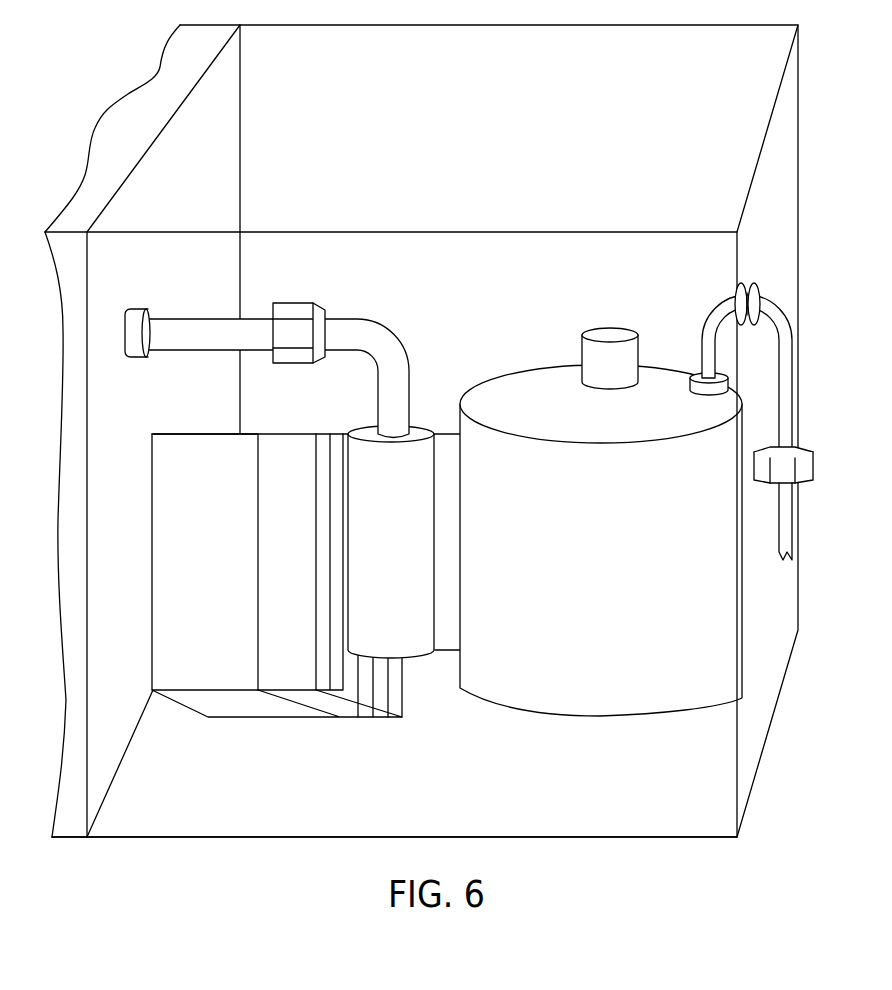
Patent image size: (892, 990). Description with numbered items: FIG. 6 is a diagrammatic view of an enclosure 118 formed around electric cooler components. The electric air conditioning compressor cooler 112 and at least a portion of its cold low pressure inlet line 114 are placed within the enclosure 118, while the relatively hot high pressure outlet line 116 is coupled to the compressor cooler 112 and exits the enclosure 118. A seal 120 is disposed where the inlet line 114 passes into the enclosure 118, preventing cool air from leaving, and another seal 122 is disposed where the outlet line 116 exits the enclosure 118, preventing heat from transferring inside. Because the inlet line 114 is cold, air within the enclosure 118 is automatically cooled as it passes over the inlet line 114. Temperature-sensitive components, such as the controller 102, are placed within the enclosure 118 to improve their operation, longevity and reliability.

The controller 102 is at (197, 673).
The electric air conditioning compressor cooler 112 is at (512, 383).
The low pressure inlet line 114 is at (195, 322).
The high pressure outlet line 116 is at (782, 368).
The enclosure 118 is at (199, 838).
The seal 120 is at (142, 358).
The seal 122 is at (756, 283).